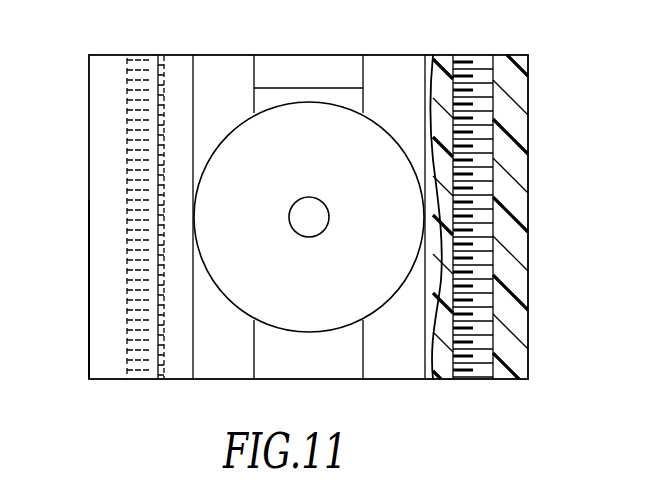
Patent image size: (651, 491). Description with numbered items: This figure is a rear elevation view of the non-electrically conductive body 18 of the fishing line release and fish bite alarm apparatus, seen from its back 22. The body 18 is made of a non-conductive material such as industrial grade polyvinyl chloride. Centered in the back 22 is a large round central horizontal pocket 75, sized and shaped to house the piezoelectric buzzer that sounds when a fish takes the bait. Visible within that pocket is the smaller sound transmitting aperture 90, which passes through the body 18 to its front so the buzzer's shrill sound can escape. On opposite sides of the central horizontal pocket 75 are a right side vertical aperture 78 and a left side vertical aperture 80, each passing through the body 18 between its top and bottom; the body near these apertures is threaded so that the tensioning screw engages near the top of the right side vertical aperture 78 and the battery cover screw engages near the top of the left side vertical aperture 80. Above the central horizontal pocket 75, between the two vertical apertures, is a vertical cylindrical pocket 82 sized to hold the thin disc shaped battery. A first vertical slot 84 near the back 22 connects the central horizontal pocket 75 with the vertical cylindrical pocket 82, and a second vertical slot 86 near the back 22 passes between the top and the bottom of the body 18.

The non-electrically conductive body 18 is at (89, 142).
The back 22 is at (89, 243).
The central horizontal pocket 75 is at (370, 134).
The right side vertical aperture 78 is at (140, 53).
The left side vertical aperture 80 is at (467, 64).
The vertical cylindrical pocket 82 is at (289, 67).
The first vertical slot 84 is at (334, 363).
The second vertical slot 86 is at (223, 365).
The sound transmitting aperture 90 is at (302, 197).